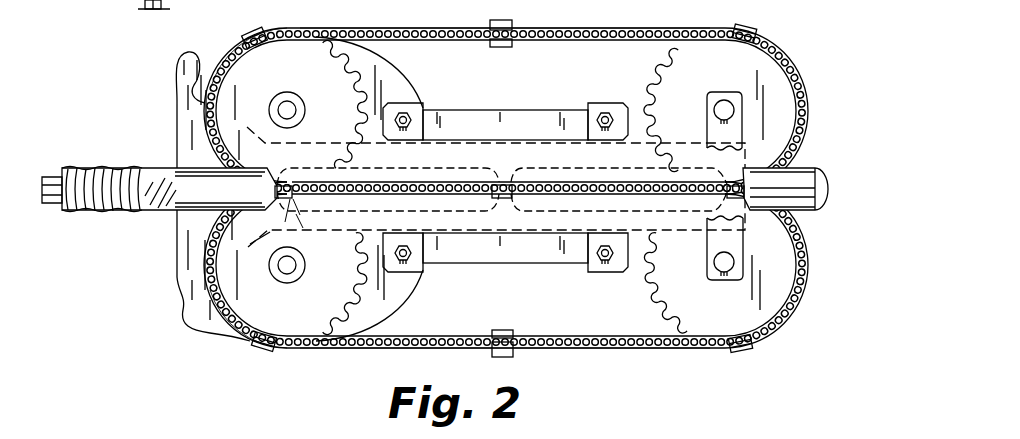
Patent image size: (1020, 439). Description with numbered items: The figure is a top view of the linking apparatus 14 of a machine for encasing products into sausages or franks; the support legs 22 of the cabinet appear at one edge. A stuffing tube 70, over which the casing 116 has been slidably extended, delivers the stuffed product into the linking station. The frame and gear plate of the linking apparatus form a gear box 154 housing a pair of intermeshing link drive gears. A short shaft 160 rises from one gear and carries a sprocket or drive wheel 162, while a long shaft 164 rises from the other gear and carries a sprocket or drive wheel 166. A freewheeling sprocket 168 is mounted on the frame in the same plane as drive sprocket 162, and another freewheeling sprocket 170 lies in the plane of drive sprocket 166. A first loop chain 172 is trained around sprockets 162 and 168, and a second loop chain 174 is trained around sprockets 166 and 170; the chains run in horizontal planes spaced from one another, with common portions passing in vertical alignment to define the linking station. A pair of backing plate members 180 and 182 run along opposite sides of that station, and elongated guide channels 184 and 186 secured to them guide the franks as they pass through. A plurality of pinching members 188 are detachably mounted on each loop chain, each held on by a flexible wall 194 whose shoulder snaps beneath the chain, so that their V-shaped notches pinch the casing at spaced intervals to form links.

The linking apparatus 14 is at (692, 412).
The support legs 22 is at (120, 0).
The stuffing tube 70 is at (55, 175).
The casing 116 is at (101, 212).
The gear box 154 is at (173, 283).
The short shaft 160 is at (287, 277).
The sprocket or drive wheel 162 is at (322, 346).
The long shaft 164 is at (290, 103).
The sprocket or drive wheel 166 is at (240, 47).
The freewheeling sprocket 168 is at (773, 290).
The freewheeling sprocket 170 is at (763, 80).
The first loop chain 172 is at (613, 348).
The second loop chain 174 is at (613, 32).
The backing plate member 180 is at (548, 118).
The backing plate member 182 is at (562, 253).
The elongated guide channel 184 is at (450, 140).
The elongated guide channel 186 is at (460, 234).
The pinching members 188 is at (297, 206).
The flexible wall 194 is at (492, 23).